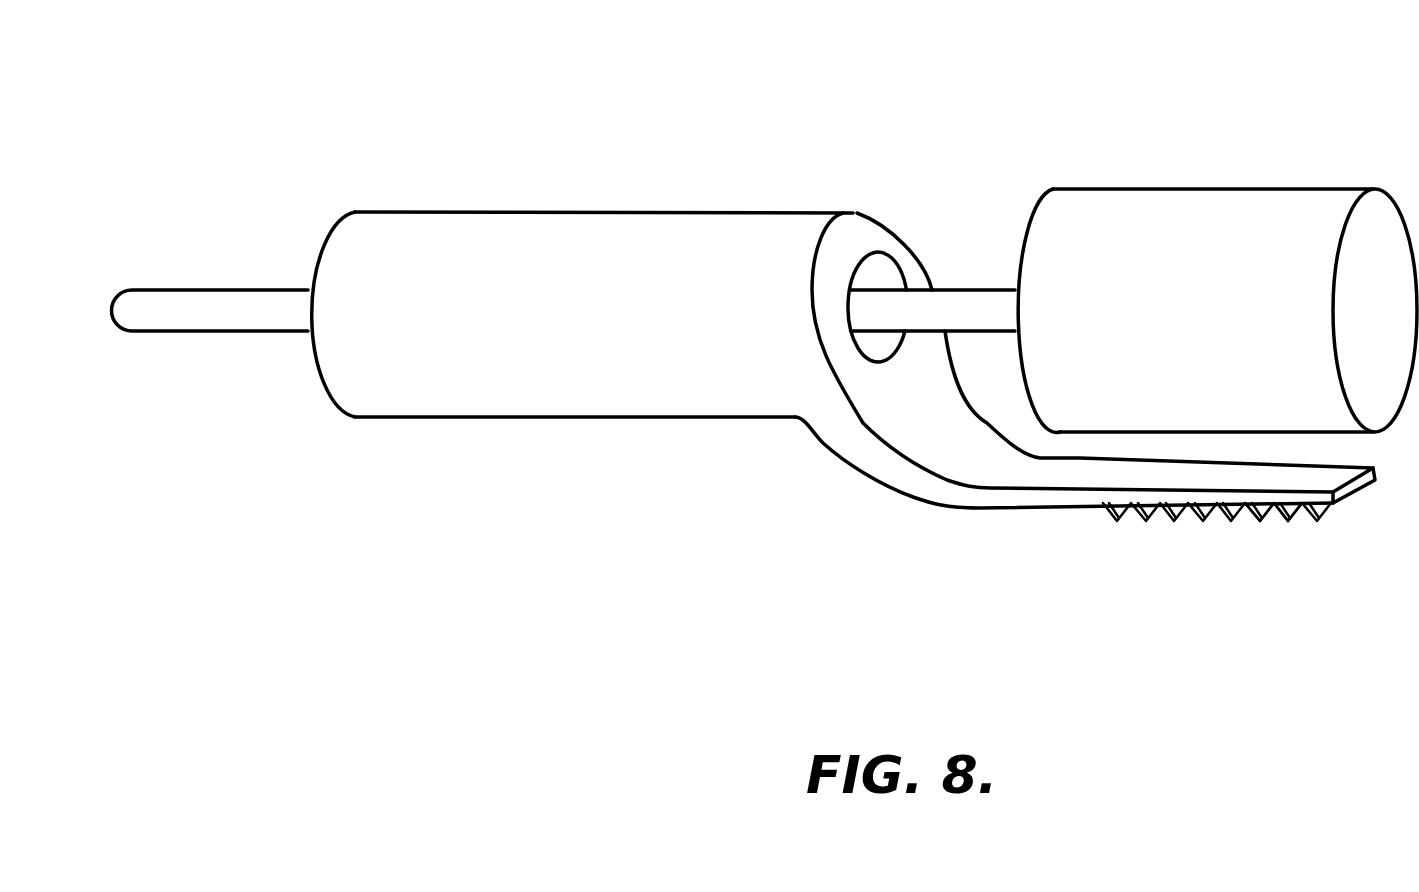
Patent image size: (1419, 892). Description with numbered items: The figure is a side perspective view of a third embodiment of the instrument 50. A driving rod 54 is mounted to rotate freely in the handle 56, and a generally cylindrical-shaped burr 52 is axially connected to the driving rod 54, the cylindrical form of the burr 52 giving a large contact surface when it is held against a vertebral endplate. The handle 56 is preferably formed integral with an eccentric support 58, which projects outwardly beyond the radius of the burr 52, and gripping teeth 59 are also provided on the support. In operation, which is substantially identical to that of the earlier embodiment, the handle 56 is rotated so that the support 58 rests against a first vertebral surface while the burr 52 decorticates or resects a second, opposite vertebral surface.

The instrument 50 is at (737, 100).
The generally cylindrical-shaped burr 52 is at (1225, 213).
The driving rod 54 is at (198, 310).
The handle 56 is at (593, 407).
The eccentric support 58 is at (1170, 495).
The gripping teeth 59 is at (1267, 513).